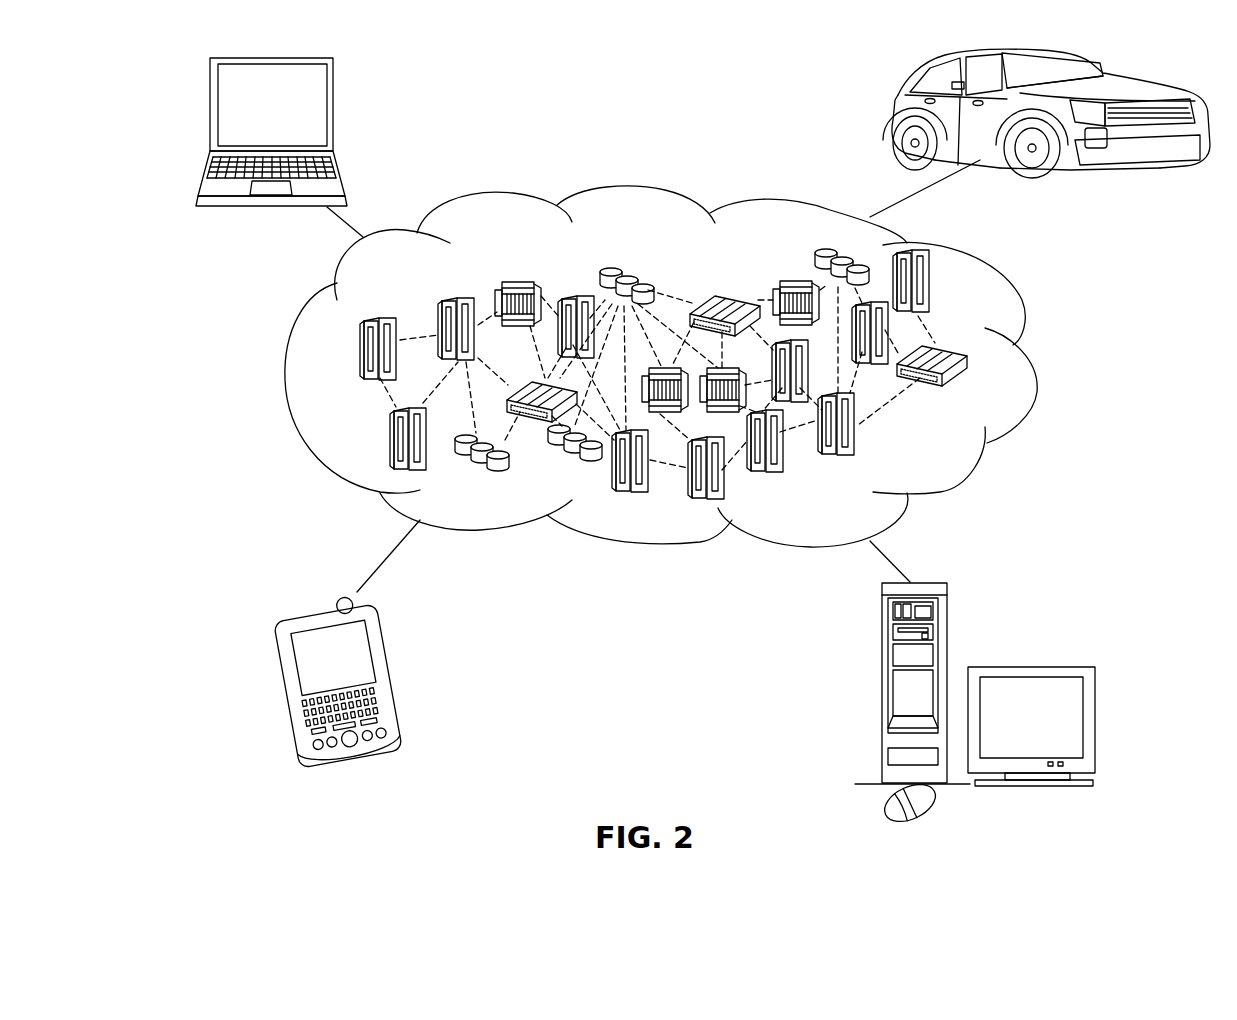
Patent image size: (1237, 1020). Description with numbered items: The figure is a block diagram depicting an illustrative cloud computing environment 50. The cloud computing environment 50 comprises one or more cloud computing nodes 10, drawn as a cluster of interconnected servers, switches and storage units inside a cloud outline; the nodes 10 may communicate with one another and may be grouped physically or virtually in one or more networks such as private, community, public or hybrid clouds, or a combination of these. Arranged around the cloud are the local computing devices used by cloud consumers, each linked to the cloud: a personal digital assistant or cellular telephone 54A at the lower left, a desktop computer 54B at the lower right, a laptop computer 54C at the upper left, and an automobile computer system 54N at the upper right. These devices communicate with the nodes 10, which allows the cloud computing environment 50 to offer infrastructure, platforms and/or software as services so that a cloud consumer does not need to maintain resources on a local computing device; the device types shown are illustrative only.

The cloud computing environment 50 is at (1028, 361).
The cloud computing nodes 10 is at (950, 450).
The laptop computer 54C is at (333, 91).
The automobile computer system 54N is at (893, 107).
The personal digital assistant (PDA) or cellular telephone 54A is at (383, 648).
The desktop computer 54B is at (882, 633).